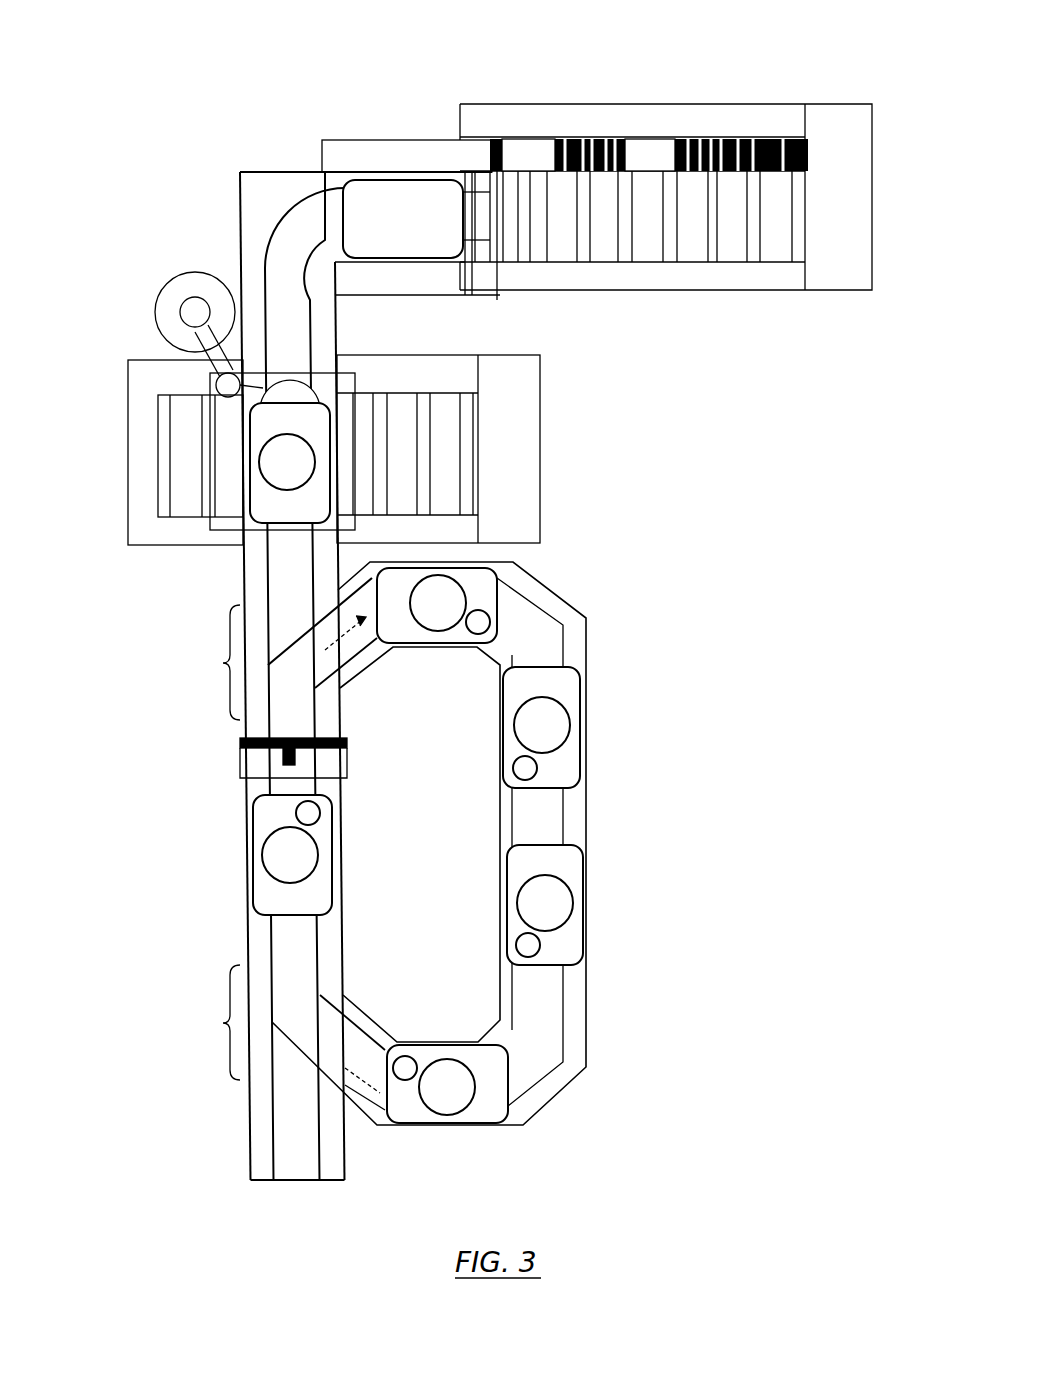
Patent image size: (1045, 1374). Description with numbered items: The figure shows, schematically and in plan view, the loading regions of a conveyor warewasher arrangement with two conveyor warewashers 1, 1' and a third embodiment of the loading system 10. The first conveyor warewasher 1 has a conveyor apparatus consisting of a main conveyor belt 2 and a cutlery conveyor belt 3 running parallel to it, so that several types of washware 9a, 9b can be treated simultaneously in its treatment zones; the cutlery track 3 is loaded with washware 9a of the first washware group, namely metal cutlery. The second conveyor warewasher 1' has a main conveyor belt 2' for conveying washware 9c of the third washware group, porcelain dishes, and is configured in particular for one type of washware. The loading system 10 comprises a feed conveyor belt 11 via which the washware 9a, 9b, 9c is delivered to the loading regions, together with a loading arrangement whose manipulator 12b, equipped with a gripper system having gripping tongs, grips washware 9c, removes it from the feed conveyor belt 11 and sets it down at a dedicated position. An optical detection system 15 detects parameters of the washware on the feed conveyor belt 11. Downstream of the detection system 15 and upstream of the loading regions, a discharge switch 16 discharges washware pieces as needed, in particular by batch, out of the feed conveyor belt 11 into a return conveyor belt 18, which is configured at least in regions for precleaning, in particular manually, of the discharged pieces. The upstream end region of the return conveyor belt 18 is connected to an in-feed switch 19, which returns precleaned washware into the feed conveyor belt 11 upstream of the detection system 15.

The loading system 10 is at (449, 46).
The first conveyor warewasher 1 is at (705, 197).
The second conveyor warewasher 1' is at (423, 449).
The main conveyor belt 2 is at (645, 270).
The main conveyor belt 2' is at (135, 429).
The cutlery conveyor belt 3 is at (758, 142).
The washware of the first washware group 9a is at (365, 223).
The washware 9b is at (420, 197).
The washware of the third washware group 9c is at (552, 730).
The feed conveyor belt 11 is at (288, 262).
The manipulator 12b is at (290, 413).
The detection system 15 is at (245, 742).
The discharge switch 16 is at (213, 662).
The return conveyor belt 18 is at (540, 628).
The in-feed switch 19 is at (213, 1022).